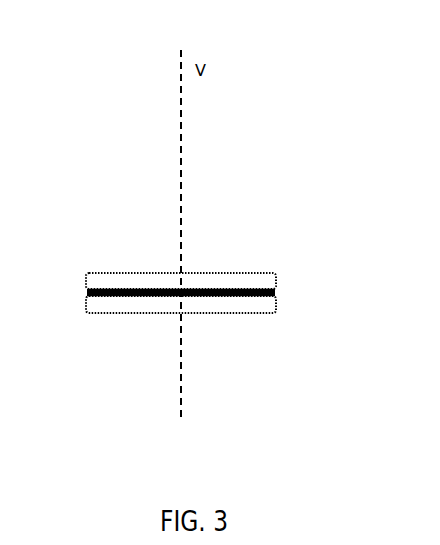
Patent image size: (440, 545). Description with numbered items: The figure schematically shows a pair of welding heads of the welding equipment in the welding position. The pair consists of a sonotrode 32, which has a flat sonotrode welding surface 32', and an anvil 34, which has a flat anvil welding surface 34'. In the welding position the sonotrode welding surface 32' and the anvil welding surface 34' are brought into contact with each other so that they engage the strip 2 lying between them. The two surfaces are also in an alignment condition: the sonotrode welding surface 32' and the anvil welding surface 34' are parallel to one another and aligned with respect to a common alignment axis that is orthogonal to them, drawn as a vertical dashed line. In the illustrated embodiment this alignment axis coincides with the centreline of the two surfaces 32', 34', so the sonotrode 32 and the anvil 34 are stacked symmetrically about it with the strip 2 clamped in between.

The strip 2 is at (87, 293).
The sonotrode 32 is at (181, 340).
The sonotrode welding surface 32' is at (212, 299).
The anvil 34 is at (181, 249).
The anvil welding surface 34' is at (148, 278).